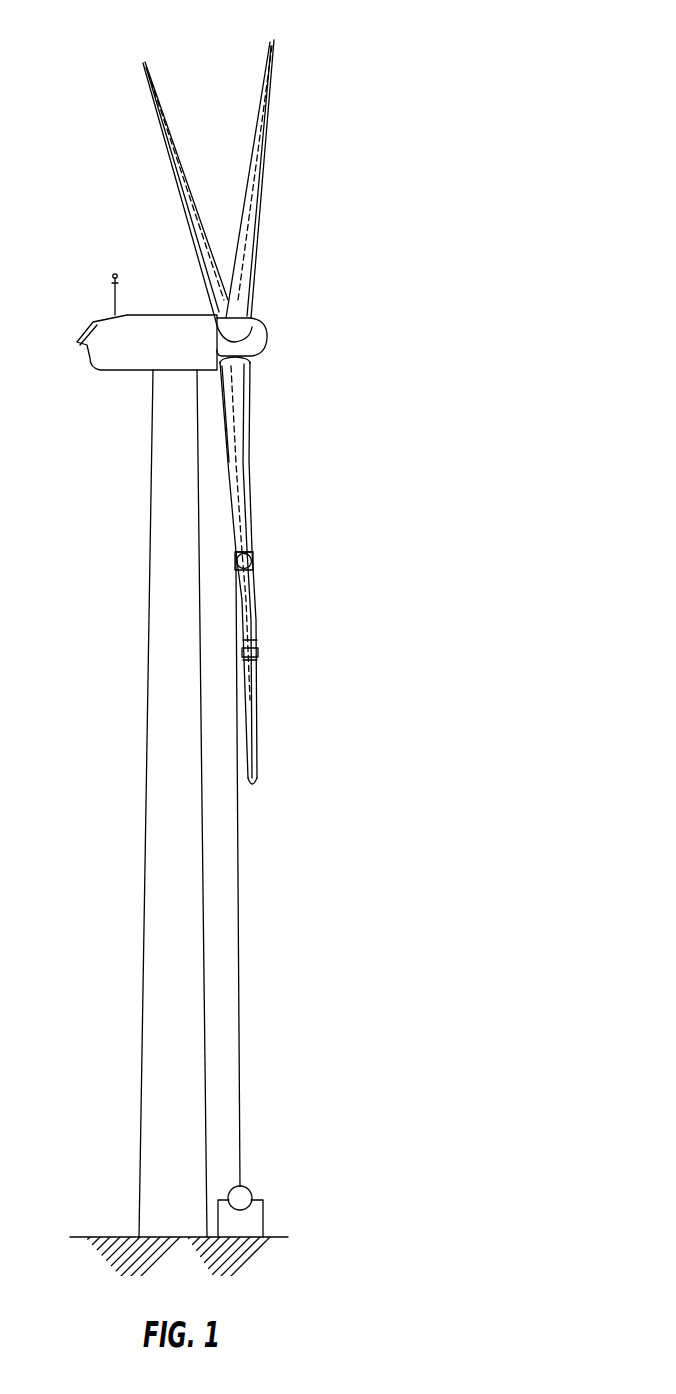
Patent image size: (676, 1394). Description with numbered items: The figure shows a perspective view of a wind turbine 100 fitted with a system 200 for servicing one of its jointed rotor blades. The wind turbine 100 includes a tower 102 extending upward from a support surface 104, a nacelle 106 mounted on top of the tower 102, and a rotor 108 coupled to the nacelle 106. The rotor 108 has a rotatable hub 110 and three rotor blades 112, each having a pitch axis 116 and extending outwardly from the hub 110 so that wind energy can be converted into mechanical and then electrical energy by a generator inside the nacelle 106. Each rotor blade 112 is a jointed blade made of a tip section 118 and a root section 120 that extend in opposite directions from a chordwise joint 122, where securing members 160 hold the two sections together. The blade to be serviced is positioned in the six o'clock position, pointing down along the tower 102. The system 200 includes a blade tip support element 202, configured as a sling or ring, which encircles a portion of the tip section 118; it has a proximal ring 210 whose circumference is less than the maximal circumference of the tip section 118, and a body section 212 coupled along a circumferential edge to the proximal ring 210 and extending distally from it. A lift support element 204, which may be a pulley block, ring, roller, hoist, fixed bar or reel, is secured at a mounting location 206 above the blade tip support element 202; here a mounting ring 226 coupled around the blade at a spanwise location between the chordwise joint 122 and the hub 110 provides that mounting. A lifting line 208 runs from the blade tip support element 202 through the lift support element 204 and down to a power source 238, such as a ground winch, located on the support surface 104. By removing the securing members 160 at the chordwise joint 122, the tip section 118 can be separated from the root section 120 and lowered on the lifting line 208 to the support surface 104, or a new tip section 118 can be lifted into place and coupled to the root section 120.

The wind turbine 100 is at (410, 140).
The tower 102 is at (163, 865).
The support surface 104 is at (115, 1237).
The nacelle 106 is at (125, 370).
The rotor 108 is at (283, 287).
The rotatable hub 110 is at (265, 337).
The rotor blade 112 is at (255, 158).
The pitch axis 116 is at (183, 205).
The tip section 118 is at (262, 750).
The root section 120 is at (260, 402).
The chordwise joint 122 is at (255, 633).
The securing member 160 is at (177, 328).
The system 200 is at (337, 558).
The blade tip support element 202 is at (258, 652).
The lift support element 204 is at (255, 553).
The mounting location 206 is at (230, 548).
The lifting line 208 is at (242, 1078).
The proximal ring 210 is at (260, 642).
The body section 212 is at (260, 660).
The mounting ring 226 is at (253, 540).
The power source 238 is at (242, 1218).